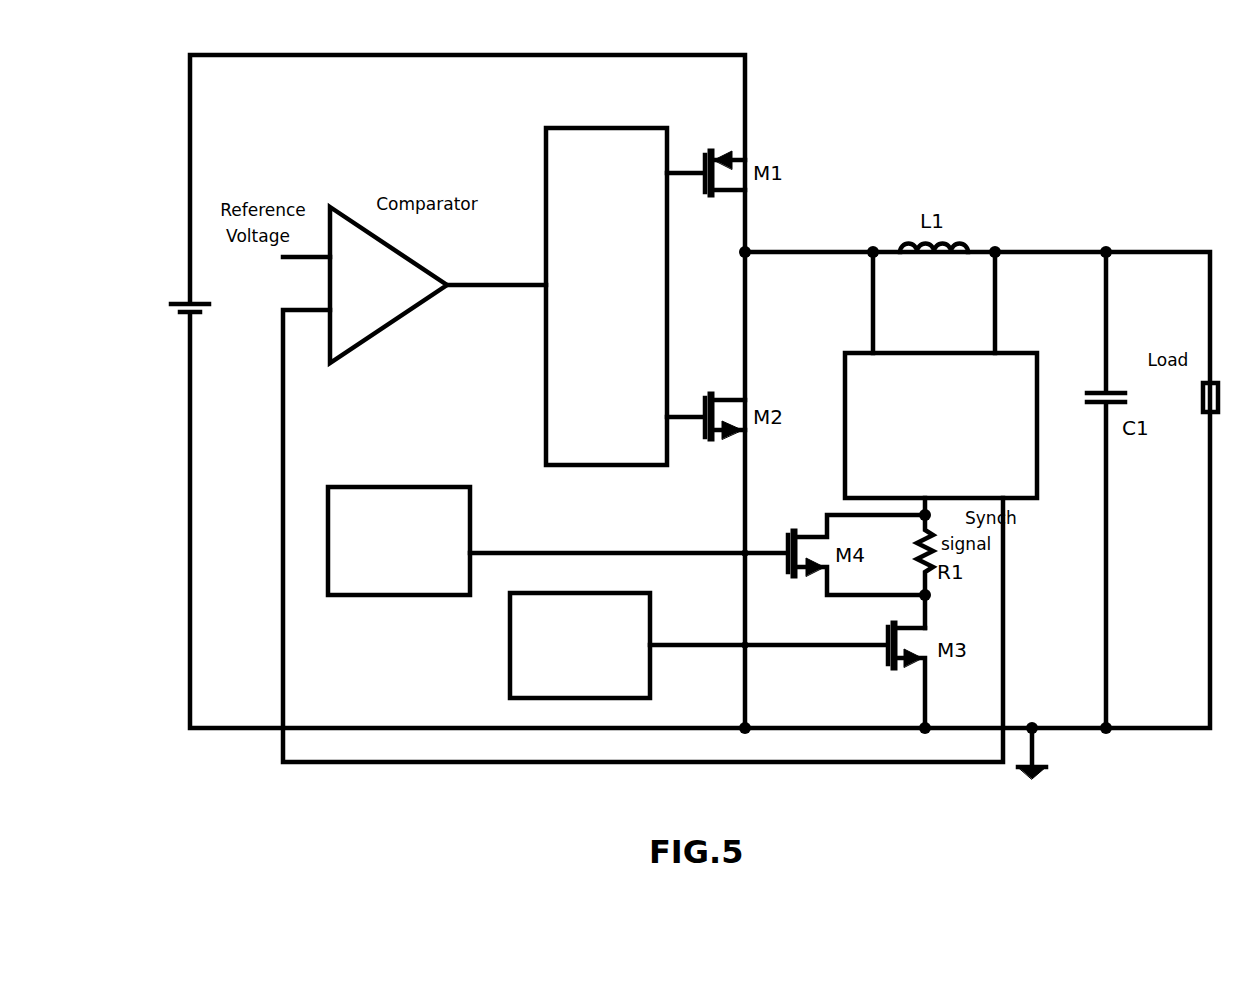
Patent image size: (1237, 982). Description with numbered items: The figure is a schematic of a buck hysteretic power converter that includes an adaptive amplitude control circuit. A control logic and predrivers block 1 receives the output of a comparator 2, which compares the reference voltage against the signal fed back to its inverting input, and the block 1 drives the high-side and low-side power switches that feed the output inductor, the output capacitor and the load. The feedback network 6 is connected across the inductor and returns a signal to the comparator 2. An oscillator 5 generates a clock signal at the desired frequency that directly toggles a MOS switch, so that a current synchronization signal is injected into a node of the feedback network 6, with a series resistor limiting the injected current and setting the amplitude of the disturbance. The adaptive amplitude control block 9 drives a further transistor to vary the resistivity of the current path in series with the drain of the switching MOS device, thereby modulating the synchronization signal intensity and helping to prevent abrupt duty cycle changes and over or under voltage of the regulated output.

The control logic and predrivers 1 is at (545, 148).
The comparator 2 is at (335, 207).
The oscillator 5 is at (505, 690).
The feedback network 6 is at (1005, 351).
The adaptive amplitude control block 9 is at (365, 487).